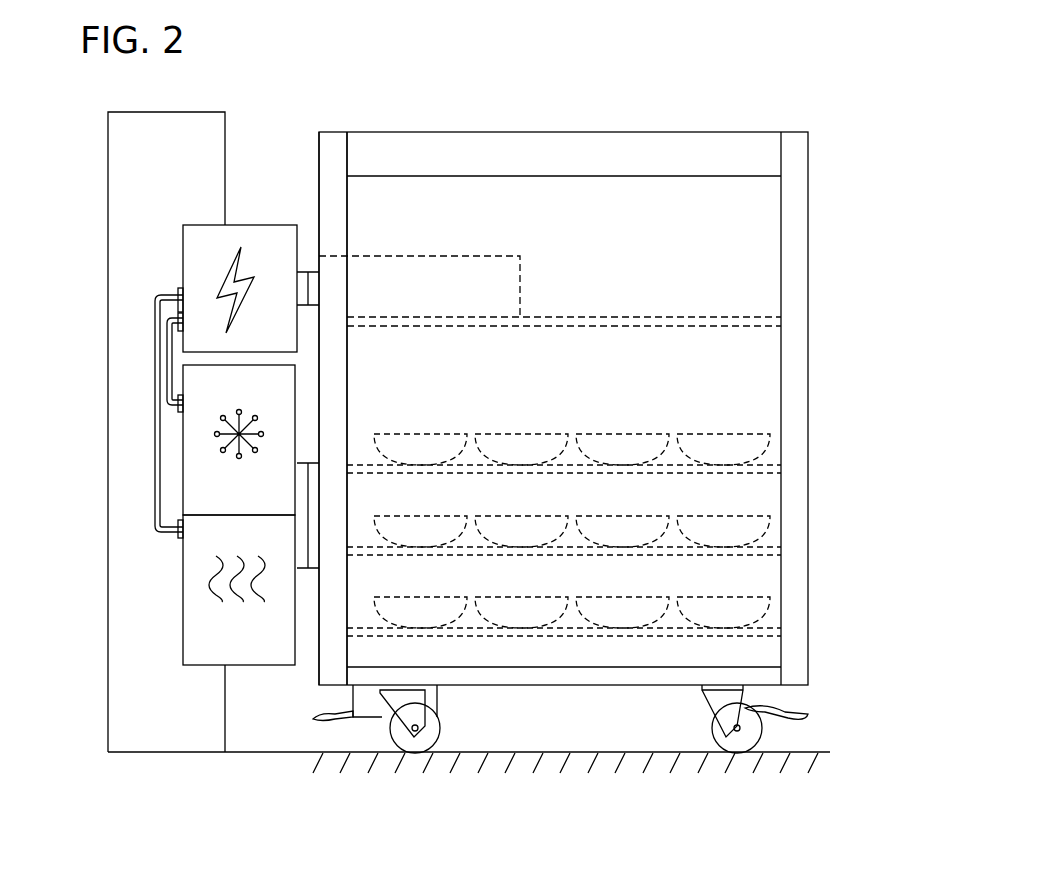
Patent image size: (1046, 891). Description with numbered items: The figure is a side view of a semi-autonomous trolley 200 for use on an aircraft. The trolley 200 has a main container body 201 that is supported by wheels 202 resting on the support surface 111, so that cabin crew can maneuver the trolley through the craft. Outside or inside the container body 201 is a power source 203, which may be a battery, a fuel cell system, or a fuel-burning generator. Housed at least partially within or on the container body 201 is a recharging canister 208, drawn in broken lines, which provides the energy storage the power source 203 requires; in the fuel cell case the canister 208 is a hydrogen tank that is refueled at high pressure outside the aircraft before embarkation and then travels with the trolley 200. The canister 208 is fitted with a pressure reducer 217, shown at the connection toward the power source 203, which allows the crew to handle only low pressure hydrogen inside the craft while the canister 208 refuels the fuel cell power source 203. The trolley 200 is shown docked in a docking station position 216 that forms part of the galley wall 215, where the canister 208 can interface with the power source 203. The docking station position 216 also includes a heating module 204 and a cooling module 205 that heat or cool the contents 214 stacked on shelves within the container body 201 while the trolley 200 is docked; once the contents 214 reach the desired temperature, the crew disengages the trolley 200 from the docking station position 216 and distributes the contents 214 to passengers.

The semi-autonomous trolley 200 is at (697, 100).
The main container body 201 is at (817, 278).
The wheels 202 is at (420, 742).
The power source 203 is at (250, 230).
The heating module 204 is at (193, 580).
The cooling module 205 is at (193, 418).
The recharging canister 208 is at (512, 270).
The support surface 111 is at (822, 750).
The contents 214 is at (750, 442).
The galley wall 215 is at (120, 153).
The docking station position 216 is at (337, 125).
The pressure reducer 217 is at (313, 283).